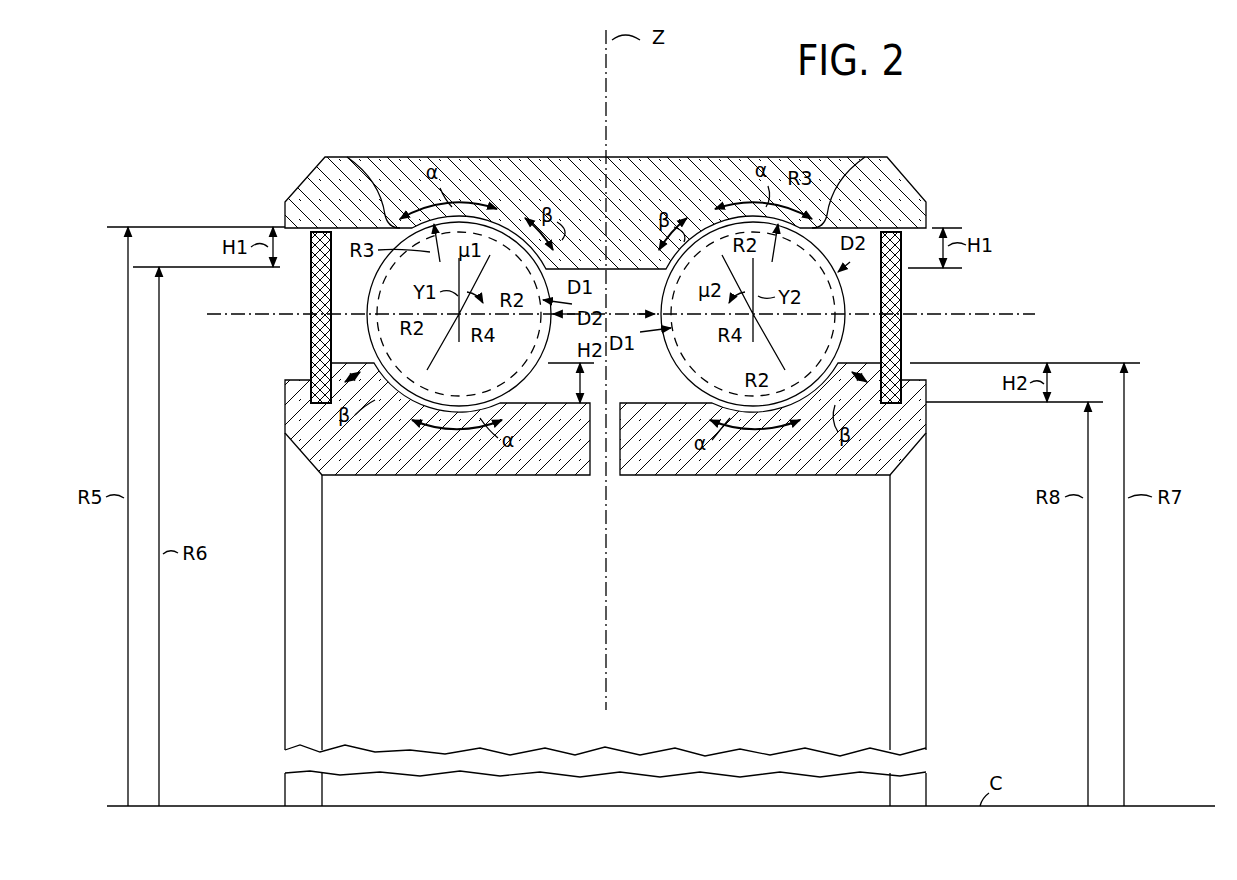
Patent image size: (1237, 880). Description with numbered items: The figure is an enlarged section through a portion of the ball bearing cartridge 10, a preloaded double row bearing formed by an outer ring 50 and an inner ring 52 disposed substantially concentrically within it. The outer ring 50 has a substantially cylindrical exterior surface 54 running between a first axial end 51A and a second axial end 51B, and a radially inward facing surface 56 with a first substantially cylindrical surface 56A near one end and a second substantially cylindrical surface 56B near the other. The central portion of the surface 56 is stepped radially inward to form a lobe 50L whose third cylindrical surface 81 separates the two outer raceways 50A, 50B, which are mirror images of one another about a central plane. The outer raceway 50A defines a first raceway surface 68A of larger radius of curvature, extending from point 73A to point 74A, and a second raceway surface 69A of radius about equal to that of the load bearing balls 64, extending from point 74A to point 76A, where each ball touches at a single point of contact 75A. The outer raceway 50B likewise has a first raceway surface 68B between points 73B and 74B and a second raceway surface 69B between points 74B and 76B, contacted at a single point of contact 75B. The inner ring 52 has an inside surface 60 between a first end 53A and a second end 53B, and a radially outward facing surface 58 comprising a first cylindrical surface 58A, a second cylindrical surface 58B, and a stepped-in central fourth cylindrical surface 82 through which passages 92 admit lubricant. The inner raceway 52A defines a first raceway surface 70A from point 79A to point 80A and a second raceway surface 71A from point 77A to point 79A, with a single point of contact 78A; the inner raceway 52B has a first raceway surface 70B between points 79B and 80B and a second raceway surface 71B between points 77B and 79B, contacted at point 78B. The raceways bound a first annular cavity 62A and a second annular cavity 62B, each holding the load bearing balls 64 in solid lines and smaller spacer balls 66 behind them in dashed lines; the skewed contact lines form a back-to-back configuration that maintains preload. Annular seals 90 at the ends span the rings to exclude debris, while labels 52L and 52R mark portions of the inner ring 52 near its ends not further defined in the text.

The ball bearing cartridge 10 is at (208, 112).
The outer ring 50 is at (922, 166).
The outer raceway 50A is at (462, 206).
The outer raceway 50B is at (768, 206).
The lobe 50L is at (618, 215).
The first axial end 51A is at (282, 205).
The second axial end 51B is at (928, 210).
The inner ring 52 is at (918, 432).
The inner raceway 52A is at (472, 420).
The inner raceway 52B is at (745, 420).
The inner ring left chamfer 52L is at (300, 445).
The inner ring right chamfer 52R is at (905, 455).
The first end 53A is at (288, 400).
The second end 53B is at (945, 400).
The cylindrical exterior surface 54 is at (436, 157).
The radially inward facing surface 56 is at (368, 218).
The first substantially cylindrical surface 56A is at (310, 200).
The second substantially cylindrical surface 56B is at (915, 206).
The radially outward facing surface 58 is at (312, 332).
The first substantially cylindrical surface 58A is at (300, 371).
The second substantially cylindrical surface 58B is at (905, 390).
The inside surface 60 is at (378, 478).
The first annular cavity 62A is at (335, 283).
The second annular cavity 62B is at (878, 290).
The load bearing balls 64 is at (332, 320).
The spacer balls 66 is at (412, 392).
The first raceway surface 68A is at (350, 178).
The first raceway surface 68B is at (828, 216).
The second raceway surface 69A is at (553, 255).
The second raceway surface 69B is at (666, 314).
The first raceway surface 70A is at (478, 416).
The first raceway surface 70B is at (690, 378).
The second raceway surface 71A is at (370, 305).
The second raceway surface 71B is at (842, 325).
The point 73A is at (418, 208).
The point 73B is at (818, 212).
The point 74A is at (494, 212).
The point 74B is at (734, 206).
The single point of contact 75A is at (530, 212).
The single point of contact 75B is at (700, 214).
The point 76A is at (556, 268).
The point 76B is at (670, 278).
The point 77A is at (362, 343).
The point 77B is at (858, 352).
The single point of contact 78A is at (436, 402).
The single point of contact 78B is at (790, 410).
The point 79A is at (455, 404).
The point 79B is at (762, 410).
The point 80A is at (508, 403).
The point 80B is at (705, 403).
The third substantially cylindrical surface 81 is at (610, 262).
The fourth cylindrical surface 82 is at (622, 440).
The annular seals 90 is at (300, 230).
The passages 92 is at (605, 468).